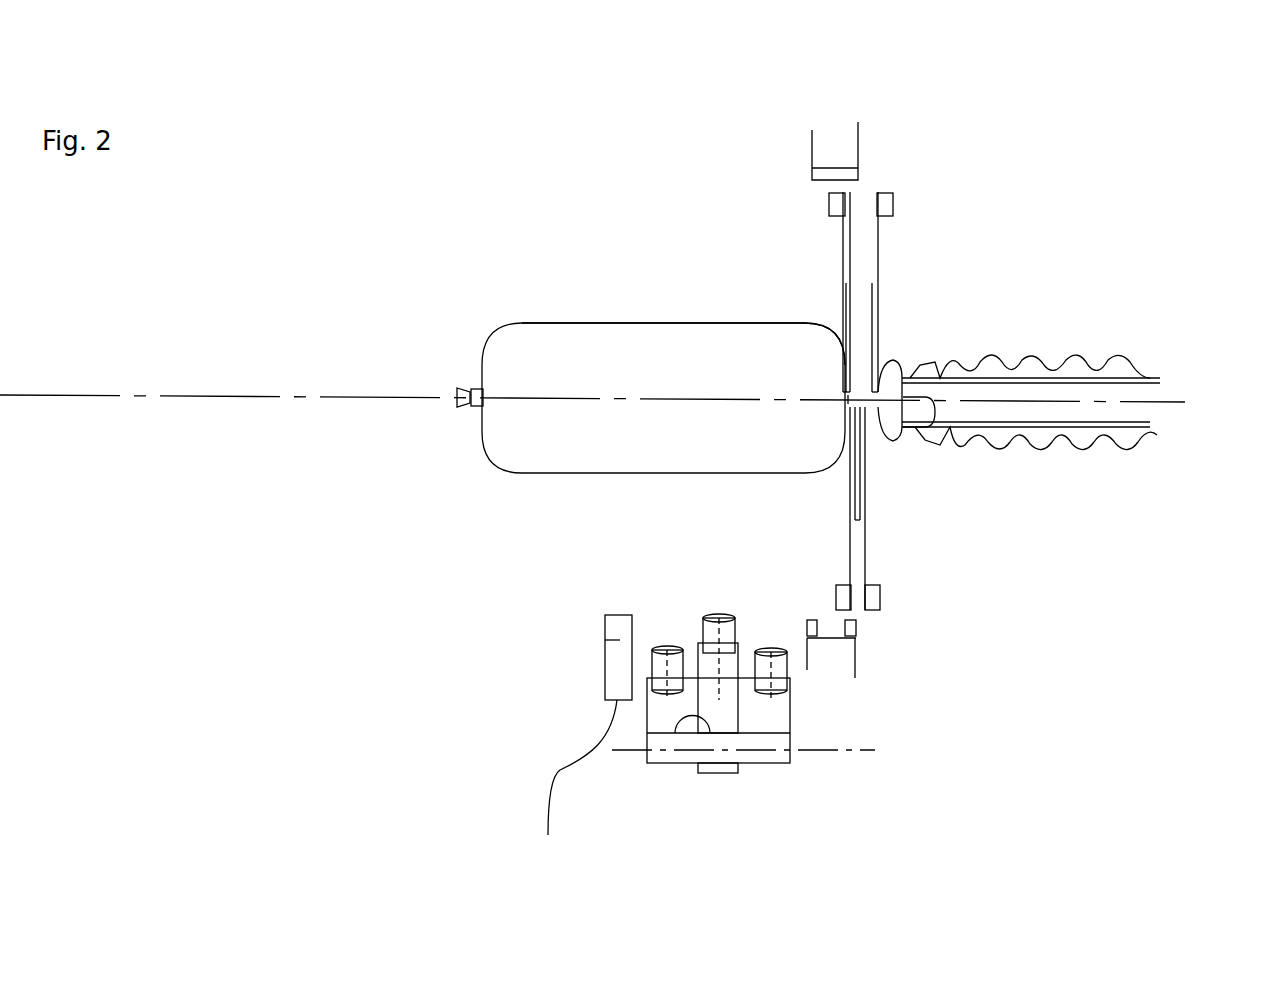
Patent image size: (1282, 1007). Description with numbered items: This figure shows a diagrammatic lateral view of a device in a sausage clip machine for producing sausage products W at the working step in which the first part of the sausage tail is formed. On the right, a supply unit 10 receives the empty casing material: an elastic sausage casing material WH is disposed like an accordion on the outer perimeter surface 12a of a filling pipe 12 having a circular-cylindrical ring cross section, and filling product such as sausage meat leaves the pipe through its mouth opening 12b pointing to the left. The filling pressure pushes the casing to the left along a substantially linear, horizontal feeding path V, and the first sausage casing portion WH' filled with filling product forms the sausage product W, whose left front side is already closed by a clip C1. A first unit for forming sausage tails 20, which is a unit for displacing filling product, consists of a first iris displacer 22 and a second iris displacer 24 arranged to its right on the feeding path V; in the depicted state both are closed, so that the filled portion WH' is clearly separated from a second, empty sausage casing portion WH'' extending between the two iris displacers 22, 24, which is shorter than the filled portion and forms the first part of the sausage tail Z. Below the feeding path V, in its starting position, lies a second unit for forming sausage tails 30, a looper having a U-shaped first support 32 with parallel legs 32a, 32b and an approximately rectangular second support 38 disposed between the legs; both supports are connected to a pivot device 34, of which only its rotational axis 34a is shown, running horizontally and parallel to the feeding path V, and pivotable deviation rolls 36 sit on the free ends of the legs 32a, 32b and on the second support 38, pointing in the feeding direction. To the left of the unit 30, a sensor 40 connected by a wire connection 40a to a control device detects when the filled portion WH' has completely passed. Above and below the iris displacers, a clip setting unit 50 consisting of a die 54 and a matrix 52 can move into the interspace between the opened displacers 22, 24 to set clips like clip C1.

The supply unit 10 is at (1086, 375).
The filling pipe 12 is at (1086, 429).
The outer perimeter surface 12a is at (1150, 378).
The mouth opening 12b is at (930, 440).
The first unit for forming sausage tails 20 is at (927, 381).
The first iris displacer 22 is at (829, 208).
The second iris displacer 24 is at (893, 205).
The second unit for forming sausage tails 30 is at (767, 700).
The first support 32 is at (713, 750).
The U-leg 32a is at (650, 760).
The U-leg 32b is at (778, 720).
The pivot device 34 is at (770, 756).
The rotational axis 34a is at (810, 750).
The deviation roll 36 is at (773, 650).
The second support 38 is at (720, 700).
The sensor 40 is at (605, 640).
The wire connection 40a is at (548, 787).
The clip setting unit 50 is at (901, 347).
The matrix 52 is at (858, 662).
The die 54 is at (845, 150).
The sausage product W is at (663, 398).
The sausage casing material WH is at (1108, 325).
The first sausage casing portion WH' is at (683, 304).
The second sausage casing portion WH'' is at (923, 350).
The clip C1 is at (482, 390).
The feeding path V is at (310, 372).
The sausage tail Z is at (848, 432).